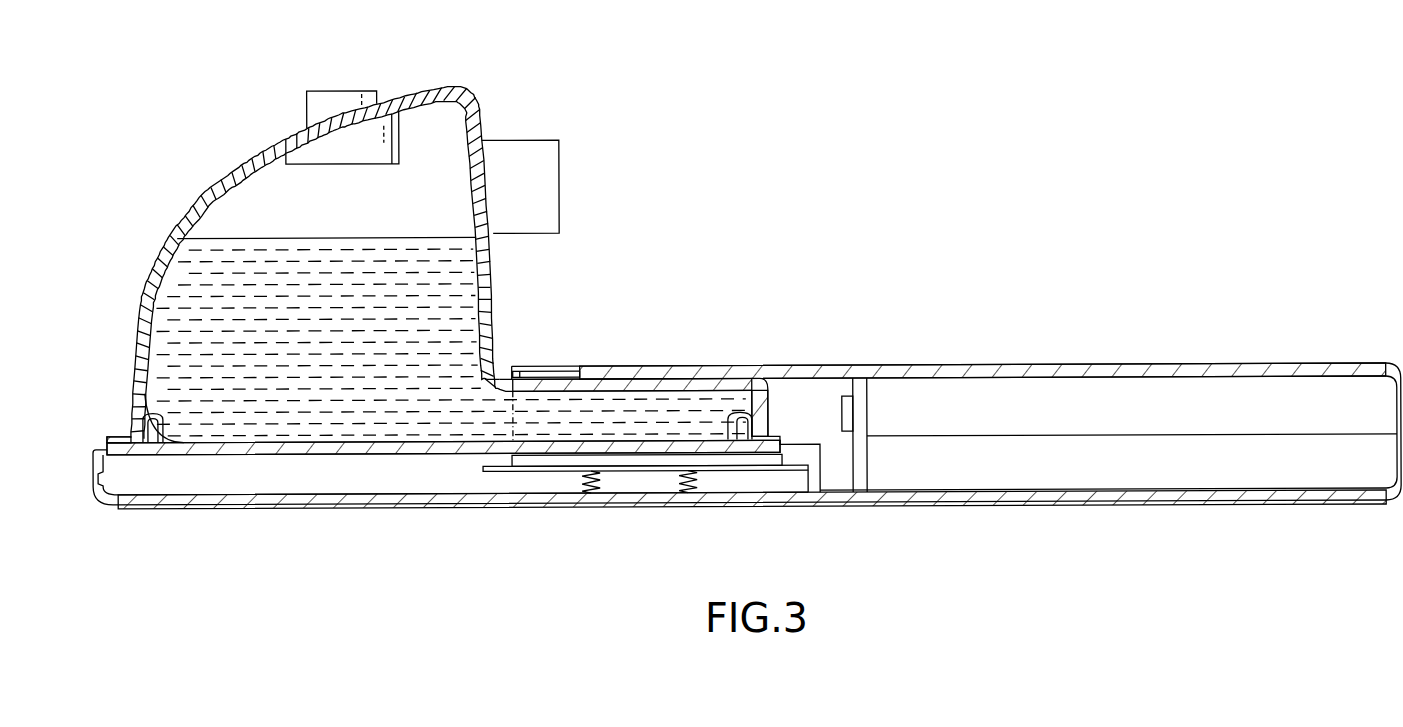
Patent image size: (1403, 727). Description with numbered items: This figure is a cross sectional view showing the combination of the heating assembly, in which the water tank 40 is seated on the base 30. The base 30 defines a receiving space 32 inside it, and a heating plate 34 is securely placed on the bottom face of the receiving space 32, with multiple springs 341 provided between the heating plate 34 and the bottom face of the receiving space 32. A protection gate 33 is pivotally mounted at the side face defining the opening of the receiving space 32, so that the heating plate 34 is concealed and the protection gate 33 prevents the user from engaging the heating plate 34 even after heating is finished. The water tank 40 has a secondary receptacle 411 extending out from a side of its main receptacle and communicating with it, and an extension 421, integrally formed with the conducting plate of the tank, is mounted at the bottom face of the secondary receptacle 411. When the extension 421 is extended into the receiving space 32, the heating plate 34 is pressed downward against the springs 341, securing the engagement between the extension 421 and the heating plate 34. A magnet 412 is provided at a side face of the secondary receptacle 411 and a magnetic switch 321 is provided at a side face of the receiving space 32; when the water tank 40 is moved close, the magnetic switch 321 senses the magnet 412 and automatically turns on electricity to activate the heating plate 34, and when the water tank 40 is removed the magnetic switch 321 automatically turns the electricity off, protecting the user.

The base 30 is at (505, 510).
The receiving space 32 is at (648, 380).
The protection gate 33 is at (550, 372).
The heating plate 34 is at (772, 455).
The springs 341 is at (690, 494).
The magnetic switch 321 is at (842, 413).
The water tank 40 is at (413, 88).
The secondary receptacle 411 is at (713, 386).
The magnet 412 is at (767, 397).
The extension 421 is at (141, 393).